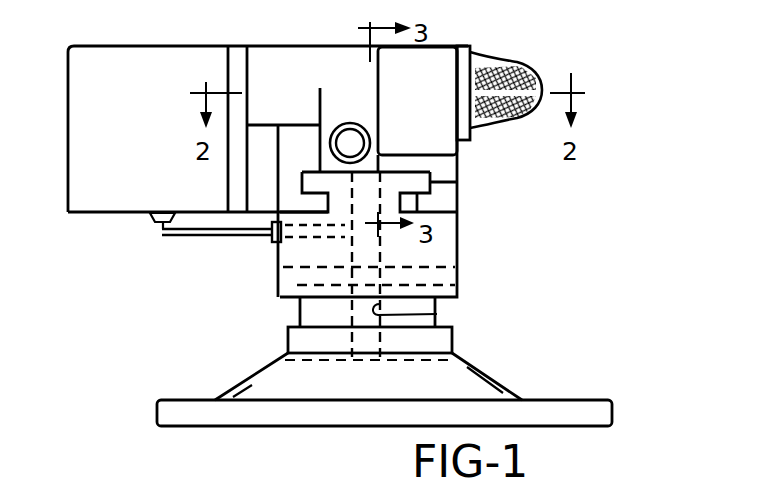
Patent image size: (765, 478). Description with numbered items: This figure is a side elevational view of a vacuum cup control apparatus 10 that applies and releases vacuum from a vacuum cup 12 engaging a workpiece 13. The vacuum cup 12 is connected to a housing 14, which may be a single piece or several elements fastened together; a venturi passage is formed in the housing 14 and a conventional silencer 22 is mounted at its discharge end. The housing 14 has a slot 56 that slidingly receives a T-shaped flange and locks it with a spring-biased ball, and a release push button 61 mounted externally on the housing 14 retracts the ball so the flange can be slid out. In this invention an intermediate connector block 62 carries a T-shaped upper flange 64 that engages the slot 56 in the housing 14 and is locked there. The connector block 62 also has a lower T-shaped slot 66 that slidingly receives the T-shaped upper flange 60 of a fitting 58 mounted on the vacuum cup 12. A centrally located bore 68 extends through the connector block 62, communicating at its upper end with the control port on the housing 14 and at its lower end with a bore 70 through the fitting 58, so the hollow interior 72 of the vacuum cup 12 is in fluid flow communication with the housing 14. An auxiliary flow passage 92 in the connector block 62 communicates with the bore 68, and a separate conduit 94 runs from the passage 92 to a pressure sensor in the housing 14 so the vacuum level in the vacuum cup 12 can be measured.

The vacuum cup control apparatus 10 is at (184, 31).
The housing 14 is at (252, 17).
The release push button 61 is at (357, 123).
The silencer 22 is at (518, 62).
The T-shaped upper flange 64 is at (311, 190).
The slot 56 is at (447, 182).
The intermediate connector block 62 is at (447, 224).
The auxiliary flow passage 92 is at (287, 231).
The conduit 94 is at (162, 232).
The centrally located bore 68 is at (352, 260).
The lower T-shaped slot 66 is at (456, 287).
The T-shaped upper flange 60 is at (292, 287).
The bore 70 is at (467, 317).
The fitting 58 is at (290, 314).
The vacuum cup 12 is at (500, 366).
The hollow interior 72 is at (290, 371).
The workpiece 13 is at (580, 402).